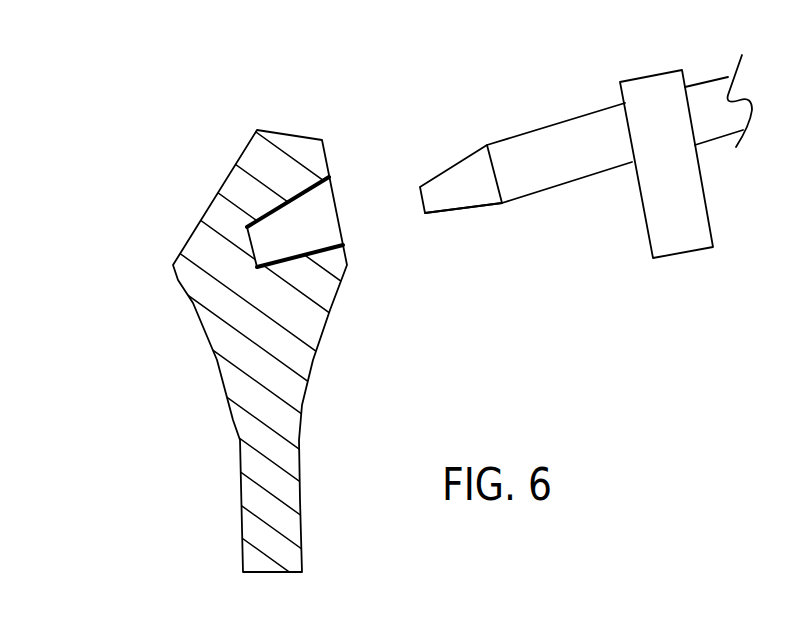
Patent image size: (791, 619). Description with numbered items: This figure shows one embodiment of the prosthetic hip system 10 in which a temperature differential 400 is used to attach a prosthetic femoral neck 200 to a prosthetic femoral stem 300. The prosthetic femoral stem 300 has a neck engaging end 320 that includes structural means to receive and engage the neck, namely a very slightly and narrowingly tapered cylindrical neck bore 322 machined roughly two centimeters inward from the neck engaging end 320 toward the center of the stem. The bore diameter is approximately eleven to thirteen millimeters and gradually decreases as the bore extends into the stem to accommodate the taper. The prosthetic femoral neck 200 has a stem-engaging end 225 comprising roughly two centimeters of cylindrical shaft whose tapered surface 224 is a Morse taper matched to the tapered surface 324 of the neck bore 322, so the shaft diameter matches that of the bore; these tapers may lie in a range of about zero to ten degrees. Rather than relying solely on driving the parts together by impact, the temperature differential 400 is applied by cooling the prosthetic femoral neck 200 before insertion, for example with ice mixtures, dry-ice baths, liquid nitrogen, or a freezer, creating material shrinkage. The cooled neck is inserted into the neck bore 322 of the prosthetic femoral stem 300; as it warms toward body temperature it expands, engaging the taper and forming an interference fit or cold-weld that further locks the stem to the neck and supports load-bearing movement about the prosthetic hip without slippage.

The prosthetic hip system 10 is at (185, 72).
The prosthetic femoral stem 300 is at (247, 415).
The neck engaging end 320 is at (333, 133).
The neck bore 322 is at (322, 198).
The tapered surface 324 is at (318, 240).
The prosthetic femoral neck 200 is at (600, 128).
The stem-engaging end 225 is at (475, 170).
The tapered surface 224 is at (462, 210).
The temperature differential 400 is at (695, 233).